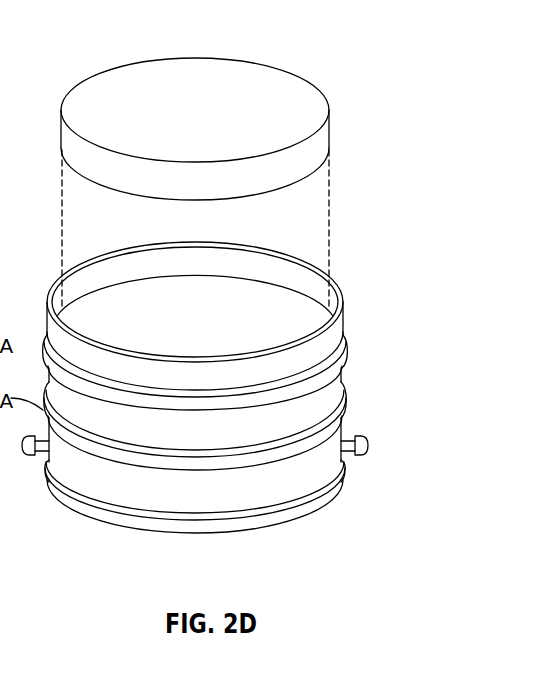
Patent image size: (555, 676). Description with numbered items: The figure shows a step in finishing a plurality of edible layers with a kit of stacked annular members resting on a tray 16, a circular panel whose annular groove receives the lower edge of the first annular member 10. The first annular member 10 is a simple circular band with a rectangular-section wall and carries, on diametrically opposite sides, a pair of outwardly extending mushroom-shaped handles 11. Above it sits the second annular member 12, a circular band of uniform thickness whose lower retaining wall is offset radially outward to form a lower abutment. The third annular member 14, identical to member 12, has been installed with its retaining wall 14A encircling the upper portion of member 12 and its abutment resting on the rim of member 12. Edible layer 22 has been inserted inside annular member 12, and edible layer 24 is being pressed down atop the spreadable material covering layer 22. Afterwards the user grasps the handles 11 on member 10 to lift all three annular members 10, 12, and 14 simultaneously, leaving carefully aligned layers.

The first annular member 10 is at (216, 391).
The handles 11 is at (28, 455).
The second annular member 12 is at (333, 393).
The third annular member 14 is at (337, 282).
The retaining wall 14A is at (348, 345).
The tray 16 is at (295, 520).
The edible layer 22 is at (130, 293).
The edible layer 24 is at (82, 100).